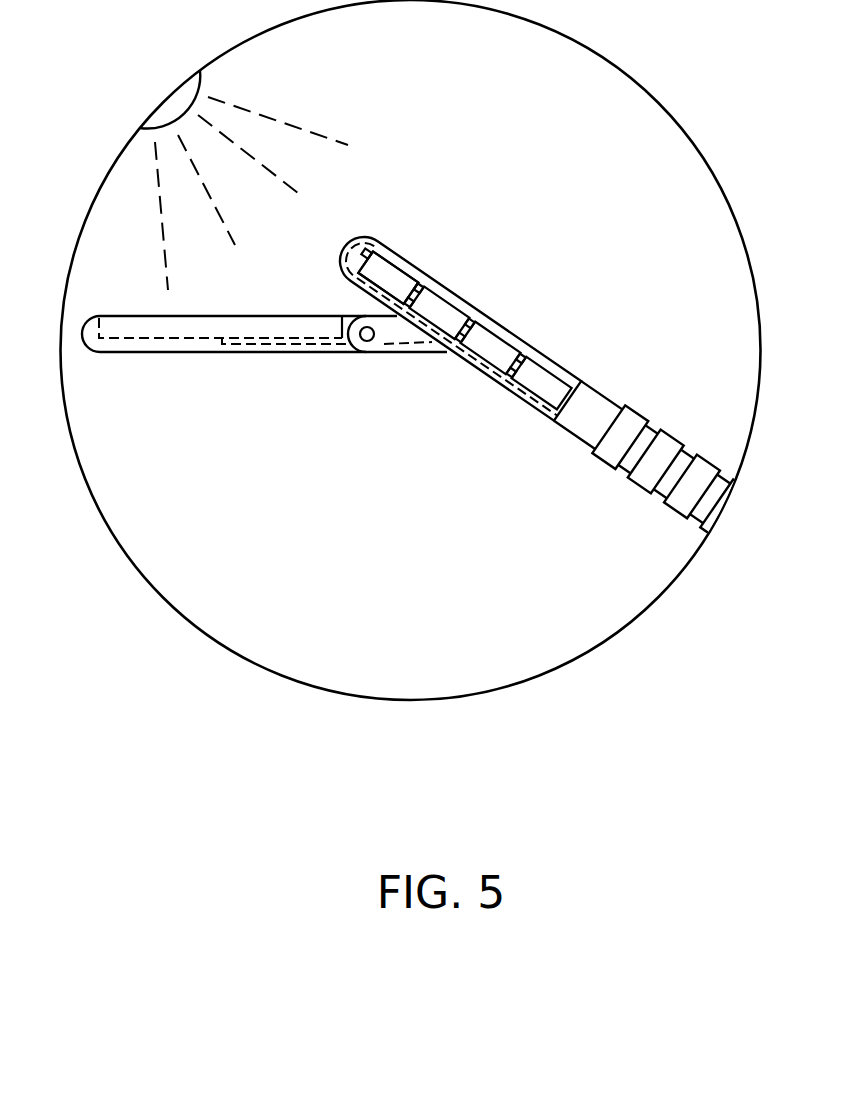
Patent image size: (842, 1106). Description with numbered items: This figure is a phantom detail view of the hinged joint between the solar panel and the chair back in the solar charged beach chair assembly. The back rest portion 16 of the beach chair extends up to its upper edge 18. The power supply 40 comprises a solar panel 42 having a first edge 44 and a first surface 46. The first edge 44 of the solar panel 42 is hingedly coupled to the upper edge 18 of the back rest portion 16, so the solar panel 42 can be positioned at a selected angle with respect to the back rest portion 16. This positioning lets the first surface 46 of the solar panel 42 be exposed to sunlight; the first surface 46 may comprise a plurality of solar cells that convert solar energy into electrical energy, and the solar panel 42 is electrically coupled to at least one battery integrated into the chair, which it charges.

The back rest portion 16 is at (600, 397).
The upper edge 18 is at (456, 282).
The power supply 40 is at (264, 361).
The solar panel 42 is at (105, 352).
The first edge 44 is at (373, 340).
The first surface 46 is at (145, 316).